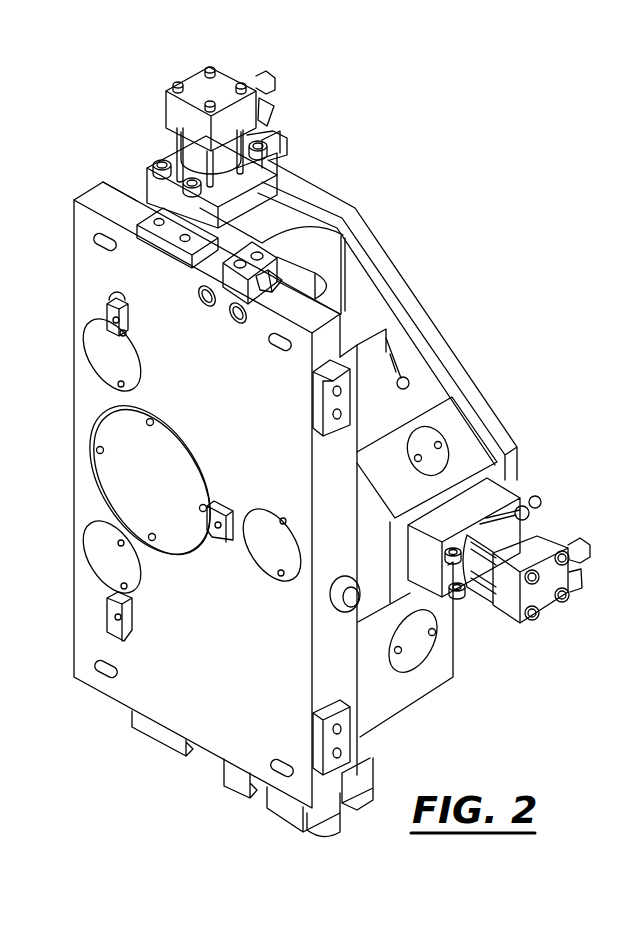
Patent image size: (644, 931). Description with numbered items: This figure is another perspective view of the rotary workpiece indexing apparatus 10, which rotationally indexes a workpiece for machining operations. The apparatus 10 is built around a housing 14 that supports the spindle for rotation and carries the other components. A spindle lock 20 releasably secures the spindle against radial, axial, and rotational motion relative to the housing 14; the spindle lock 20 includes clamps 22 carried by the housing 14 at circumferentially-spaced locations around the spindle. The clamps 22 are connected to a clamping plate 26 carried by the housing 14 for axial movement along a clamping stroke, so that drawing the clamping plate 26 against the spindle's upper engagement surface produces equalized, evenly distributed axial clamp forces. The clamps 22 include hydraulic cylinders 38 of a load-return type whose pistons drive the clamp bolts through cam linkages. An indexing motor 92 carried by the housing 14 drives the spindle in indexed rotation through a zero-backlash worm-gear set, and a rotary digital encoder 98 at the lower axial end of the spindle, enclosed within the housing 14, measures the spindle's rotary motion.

The rotary workpiece indexing apparatus 10 is at (412, 145).
The housing 14 is at (188, 696).
The spindle lock 20 is at (387, 258).
The clamps 22 is at (220, 88).
The clamping plate 26 is at (452, 358).
The hydraulic cylinders 38 is at (546, 546).
The indexing motor 92 is at (343, 823).
The rotary digital encoder 98 is at (130, 473).